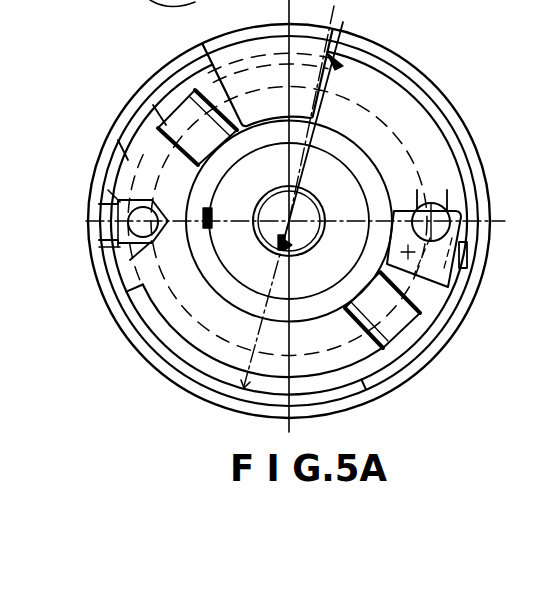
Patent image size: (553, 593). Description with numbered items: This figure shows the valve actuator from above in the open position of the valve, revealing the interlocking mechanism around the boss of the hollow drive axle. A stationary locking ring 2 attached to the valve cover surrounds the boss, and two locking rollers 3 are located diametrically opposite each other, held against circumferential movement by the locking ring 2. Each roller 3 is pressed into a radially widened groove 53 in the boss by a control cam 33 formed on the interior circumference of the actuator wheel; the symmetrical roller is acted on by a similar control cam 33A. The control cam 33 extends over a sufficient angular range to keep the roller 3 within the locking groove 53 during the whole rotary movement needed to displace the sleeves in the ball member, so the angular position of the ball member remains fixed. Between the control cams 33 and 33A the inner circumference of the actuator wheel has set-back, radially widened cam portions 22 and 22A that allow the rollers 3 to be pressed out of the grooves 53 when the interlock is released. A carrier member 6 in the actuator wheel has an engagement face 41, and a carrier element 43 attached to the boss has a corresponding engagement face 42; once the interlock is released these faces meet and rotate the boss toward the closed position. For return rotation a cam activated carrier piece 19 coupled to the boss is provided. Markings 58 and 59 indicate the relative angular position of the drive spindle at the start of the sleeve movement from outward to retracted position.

The locking ring 2 is at (143, 13).
The carrier member 6 is at (201, 42).
The carrier piece 19 is at (153, 108).
The cam portion 22 is at (122, 147).
The roller 3 is at (108, 198).
The groove 53 is at (103, 247).
The control cam 33 is at (127, 293).
The control cam 33A is at (407, 110).
The engagement face 41 is at (331, 85).
The engagement face 42 is at (417, 200).
The carrier element 43 is at (470, 263).
The marking 58 is at (212, 228).
The marking 59 is at (290, 247).
The cam portion 22A is at (366, 392).